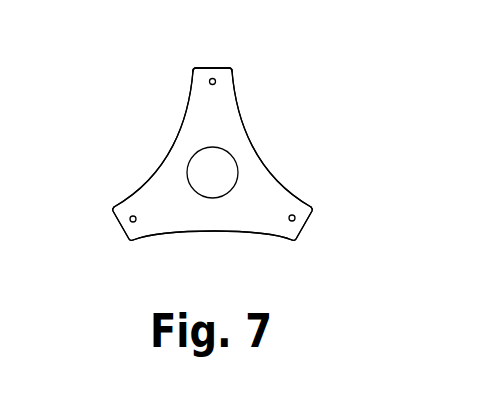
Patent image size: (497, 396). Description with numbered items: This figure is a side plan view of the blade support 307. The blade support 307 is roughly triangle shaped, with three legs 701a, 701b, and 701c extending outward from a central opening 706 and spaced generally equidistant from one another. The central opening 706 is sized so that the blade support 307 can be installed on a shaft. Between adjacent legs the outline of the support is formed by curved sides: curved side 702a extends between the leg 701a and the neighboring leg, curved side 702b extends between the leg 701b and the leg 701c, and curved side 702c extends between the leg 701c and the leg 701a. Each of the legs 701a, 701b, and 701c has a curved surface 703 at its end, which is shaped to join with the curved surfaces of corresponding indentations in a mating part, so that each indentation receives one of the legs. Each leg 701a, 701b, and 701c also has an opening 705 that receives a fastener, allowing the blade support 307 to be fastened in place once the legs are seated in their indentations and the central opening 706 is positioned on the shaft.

The blade support 307 is at (315, 67).
The curved surface 703 is at (198, 67).
The opening 705 is at (214, 79).
The leg 701a is at (212, 67).
The leg 701b is at (120, 228).
The leg 701c is at (302, 232).
The curved side 702a is at (172, 152).
The curved side 702b is at (217, 217).
The curved side 702c is at (265, 163).
The central opening 706 is at (230, 186).